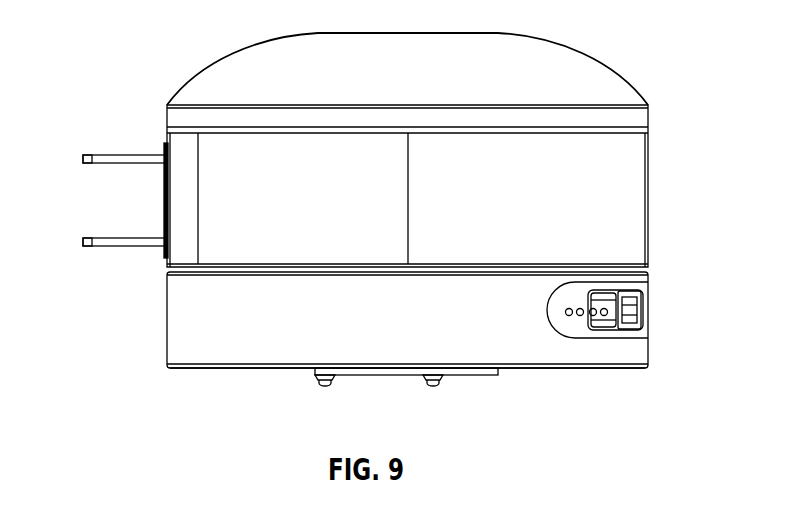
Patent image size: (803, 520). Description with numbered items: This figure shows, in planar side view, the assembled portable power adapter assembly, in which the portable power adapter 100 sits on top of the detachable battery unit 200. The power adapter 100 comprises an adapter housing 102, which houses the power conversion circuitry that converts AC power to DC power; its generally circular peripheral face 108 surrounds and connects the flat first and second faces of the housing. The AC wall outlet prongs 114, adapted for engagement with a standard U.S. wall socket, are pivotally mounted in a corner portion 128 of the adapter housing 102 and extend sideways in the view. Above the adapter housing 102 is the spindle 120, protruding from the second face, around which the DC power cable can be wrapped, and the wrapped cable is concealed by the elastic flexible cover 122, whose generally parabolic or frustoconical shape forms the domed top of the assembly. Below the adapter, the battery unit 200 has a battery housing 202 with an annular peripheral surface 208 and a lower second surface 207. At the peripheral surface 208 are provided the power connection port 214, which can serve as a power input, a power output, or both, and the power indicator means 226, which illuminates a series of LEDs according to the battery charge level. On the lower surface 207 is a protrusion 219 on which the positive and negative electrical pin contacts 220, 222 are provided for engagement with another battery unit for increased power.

The portable power adapter 100 is at (392, 133).
The adapter housing 102 is at (650, 178).
The peripheral face 108 is at (549, 203).
The AC wall outlet prongs 114 is at (100, 155).
The spindle 120 is at (490, 33).
The flexible cover 122 is at (590, 58).
The corner portion 128 is at (338, 203).
The battery unit 200 is at (416, 361).
The battery housing 202 is at (165, 320).
The lower second surface 207 is at (200, 370).
The annular peripheral surface 208 is at (373, 325).
The power connection port 214 is at (645, 305).
The protrusion 219 is at (313, 372).
The positive electrical pin contact 220 is at (436, 386).
The negative electrical pin contact 222 is at (327, 386).
The power indicator means 226 is at (576, 322).